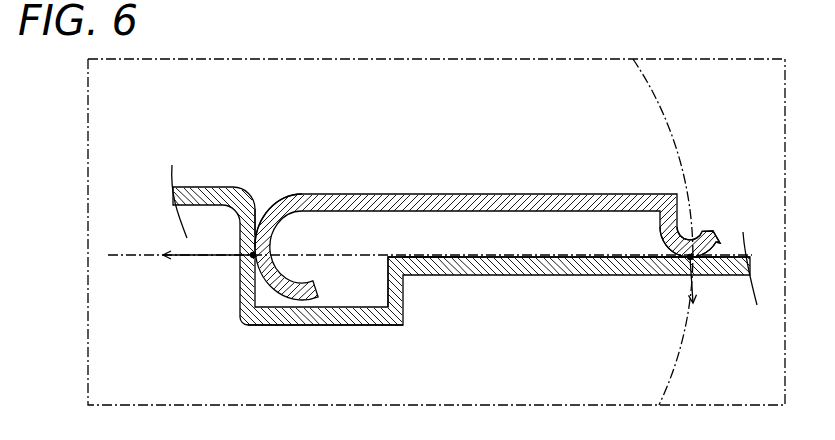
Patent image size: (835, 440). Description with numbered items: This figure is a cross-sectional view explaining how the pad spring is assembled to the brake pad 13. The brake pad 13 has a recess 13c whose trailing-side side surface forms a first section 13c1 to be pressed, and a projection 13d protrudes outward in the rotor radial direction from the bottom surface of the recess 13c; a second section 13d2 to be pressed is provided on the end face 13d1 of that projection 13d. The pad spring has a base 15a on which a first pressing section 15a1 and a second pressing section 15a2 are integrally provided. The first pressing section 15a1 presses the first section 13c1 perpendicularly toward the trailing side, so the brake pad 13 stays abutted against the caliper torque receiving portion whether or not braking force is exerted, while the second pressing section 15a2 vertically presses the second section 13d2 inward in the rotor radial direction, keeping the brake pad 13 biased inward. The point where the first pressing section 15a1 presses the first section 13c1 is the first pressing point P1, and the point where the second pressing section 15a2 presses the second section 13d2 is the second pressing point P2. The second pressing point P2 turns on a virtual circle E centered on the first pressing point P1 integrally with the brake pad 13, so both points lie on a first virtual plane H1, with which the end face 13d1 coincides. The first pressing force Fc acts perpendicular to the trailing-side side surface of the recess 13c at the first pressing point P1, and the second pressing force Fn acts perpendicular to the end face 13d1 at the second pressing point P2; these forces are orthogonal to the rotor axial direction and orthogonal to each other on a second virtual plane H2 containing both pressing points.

The brake pad 13 is at (197, 152).
The recess 13c is at (313, 178).
The first section to be pressed 13c1 is at (258, 204).
The projection 13d is at (472, 256).
The end face 13d1 is at (432, 259).
The second section to be pressed 13d2 is at (662, 257).
The base 15a is at (452, 195).
The first pressing section 15a1 is at (272, 326).
The second pressing section 15a2 is at (724, 241).
The virtual circle E is at (664, 93).
The first virtual plane H1 is at (122, 259).
The second virtual plane H2 is at (755, 47).
The first pressing point P1 is at (250, 257).
The second pressing point P2 is at (697, 262).
The first pressing force Fc is at (198, 244).
The second pressing force Fn is at (676, 290).